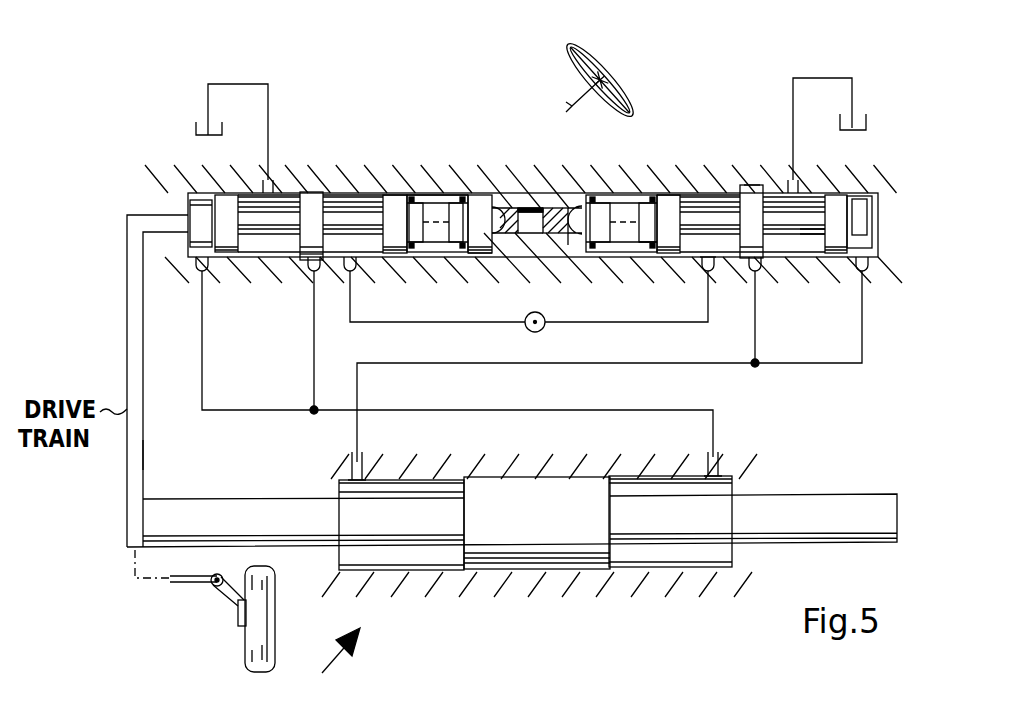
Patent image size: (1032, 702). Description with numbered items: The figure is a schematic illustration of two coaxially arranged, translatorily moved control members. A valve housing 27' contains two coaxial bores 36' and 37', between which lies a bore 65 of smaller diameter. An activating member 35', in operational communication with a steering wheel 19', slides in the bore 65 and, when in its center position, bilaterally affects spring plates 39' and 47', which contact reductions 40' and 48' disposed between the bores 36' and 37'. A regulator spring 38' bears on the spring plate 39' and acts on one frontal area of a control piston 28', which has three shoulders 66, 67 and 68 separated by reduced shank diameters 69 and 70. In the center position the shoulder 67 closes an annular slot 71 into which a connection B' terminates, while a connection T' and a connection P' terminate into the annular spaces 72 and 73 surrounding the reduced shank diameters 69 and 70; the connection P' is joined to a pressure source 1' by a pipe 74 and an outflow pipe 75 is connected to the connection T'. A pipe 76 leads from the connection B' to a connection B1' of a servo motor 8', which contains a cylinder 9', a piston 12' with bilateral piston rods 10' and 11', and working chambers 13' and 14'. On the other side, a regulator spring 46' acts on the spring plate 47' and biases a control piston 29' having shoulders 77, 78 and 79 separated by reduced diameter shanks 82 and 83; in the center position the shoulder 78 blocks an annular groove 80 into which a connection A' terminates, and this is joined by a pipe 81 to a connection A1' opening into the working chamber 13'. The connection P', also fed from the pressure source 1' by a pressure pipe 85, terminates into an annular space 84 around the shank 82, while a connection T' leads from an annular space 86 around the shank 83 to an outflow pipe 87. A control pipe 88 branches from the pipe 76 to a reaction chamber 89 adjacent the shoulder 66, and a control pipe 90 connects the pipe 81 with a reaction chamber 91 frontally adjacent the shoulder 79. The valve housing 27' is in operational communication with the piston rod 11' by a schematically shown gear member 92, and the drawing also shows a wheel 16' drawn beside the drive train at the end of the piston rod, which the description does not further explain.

The pressure source 1' is at (550, 334).
The servo motor 8' is at (343, 650).
The cylinder 9' is at (401, 567).
The piston rod 10' is at (670, 566).
The piston rod 11' is at (512, 497).
The piston 12' is at (537, 567).
The working chamber 13' is at (433, 608).
The working chamber 14' is at (670, 607).
The wheel 16' is at (216, 619).
The steering wheel 19' is at (614, 80).
The valve housing 27' is at (425, 141).
The control piston 28' is at (313, 226).
The control piston 29' is at (753, 221).
The activating member 35' is at (536, 176).
The coaxial bore 36' is at (388, 186).
The coaxial bore 37' is at (658, 185).
The regulator spring 38' is at (490, 285).
The spring plate 39' is at (477, 186).
The reduction 40' is at (506, 160).
The regulator spring 46' is at (665, 279).
The spring plate 47' is at (621, 256).
The reduction 48' is at (569, 275).
The bore 65 is at (568, 205).
The shoulder 66 is at (195, 193).
The shoulder 67 is at (317, 262).
The shoulder 68 is at (415, 230).
The reduced shank diameter 69 is at (268, 226).
The reduced shank diameter 70 is at (353, 226).
The annular slot 71 is at (311, 193).
The annular space 72 is at (257, 249).
The annular space 73 is at (357, 193).
The pipe 74 is at (437, 323).
The outflow pipe 75 is at (233, 84).
The pipe 76 is at (553, 410).
The shoulder 77 is at (673, 193).
The shoulder 78 is at (748, 185).
The shoulder 79 is at (866, 193).
The annular groove 80 is at (765, 193).
The pipe 81 is at (488, 363).
The reduced diameter shank 82 is at (720, 193).
The reduced diameter shank 83 is at (793, 222).
The annular space 84 is at (724, 270).
The pressure pipe 85 is at (646, 323).
The annular space 86 is at (813, 243).
The outflow pipe 87 is at (826, 78).
The control pipe 88 is at (262, 410).
The reaction chamber 89 is at (196, 246).
The control pipe 90 is at (806, 363).
The reaction chamber 91 is at (866, 264).
The gear member 92 is at (142, 451).
The connection A' is at (764, 281).
The connection B' is at (306, 281).
The connection P' is at (536, 281).
The connection T' is at (535, 164).
The connection A1' is at (377, 453).
The connection B1' is at (731, 450).